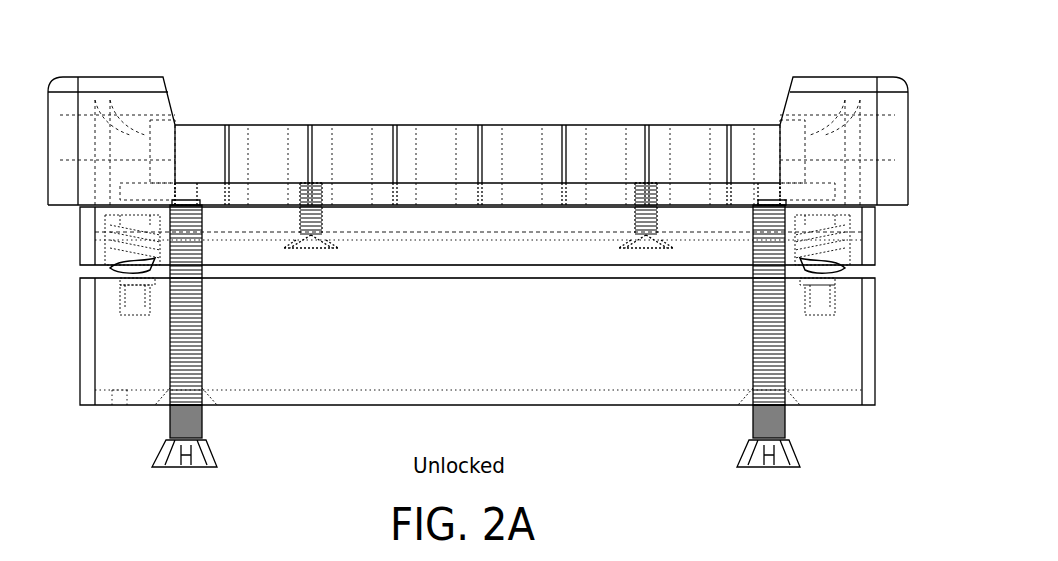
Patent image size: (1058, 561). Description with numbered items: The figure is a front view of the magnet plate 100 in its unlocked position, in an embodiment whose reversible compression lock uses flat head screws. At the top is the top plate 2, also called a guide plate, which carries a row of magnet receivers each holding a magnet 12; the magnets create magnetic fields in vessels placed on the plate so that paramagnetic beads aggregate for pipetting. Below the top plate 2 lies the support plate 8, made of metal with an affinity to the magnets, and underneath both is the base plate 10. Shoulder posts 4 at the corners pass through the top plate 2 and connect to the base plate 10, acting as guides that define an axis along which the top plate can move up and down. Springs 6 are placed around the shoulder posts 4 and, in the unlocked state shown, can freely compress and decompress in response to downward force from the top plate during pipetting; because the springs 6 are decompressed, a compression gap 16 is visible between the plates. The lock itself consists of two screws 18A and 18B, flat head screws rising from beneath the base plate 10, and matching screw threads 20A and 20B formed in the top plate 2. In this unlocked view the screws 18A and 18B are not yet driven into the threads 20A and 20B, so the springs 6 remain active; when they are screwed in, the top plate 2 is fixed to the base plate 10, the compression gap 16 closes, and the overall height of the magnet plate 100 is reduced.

The top plate 2 is at (888, 78).
The shoulder post 4 is at (835, 300).
The spring 6 is at (830, 256).
The support plate 8 is at (700, 258).
The base plate 10 is at (820, 350).
The magnet 12 is at (297, 118).
The compression gap 16 is at (78, 270).
The screw 18A is at (160, 343).
The screw 18B is at (753, 362).
The screw thread 20A is at (190, 205).
The screw thread 20B is at (766, 203).
The magnet plate 100 is at (105, 461).